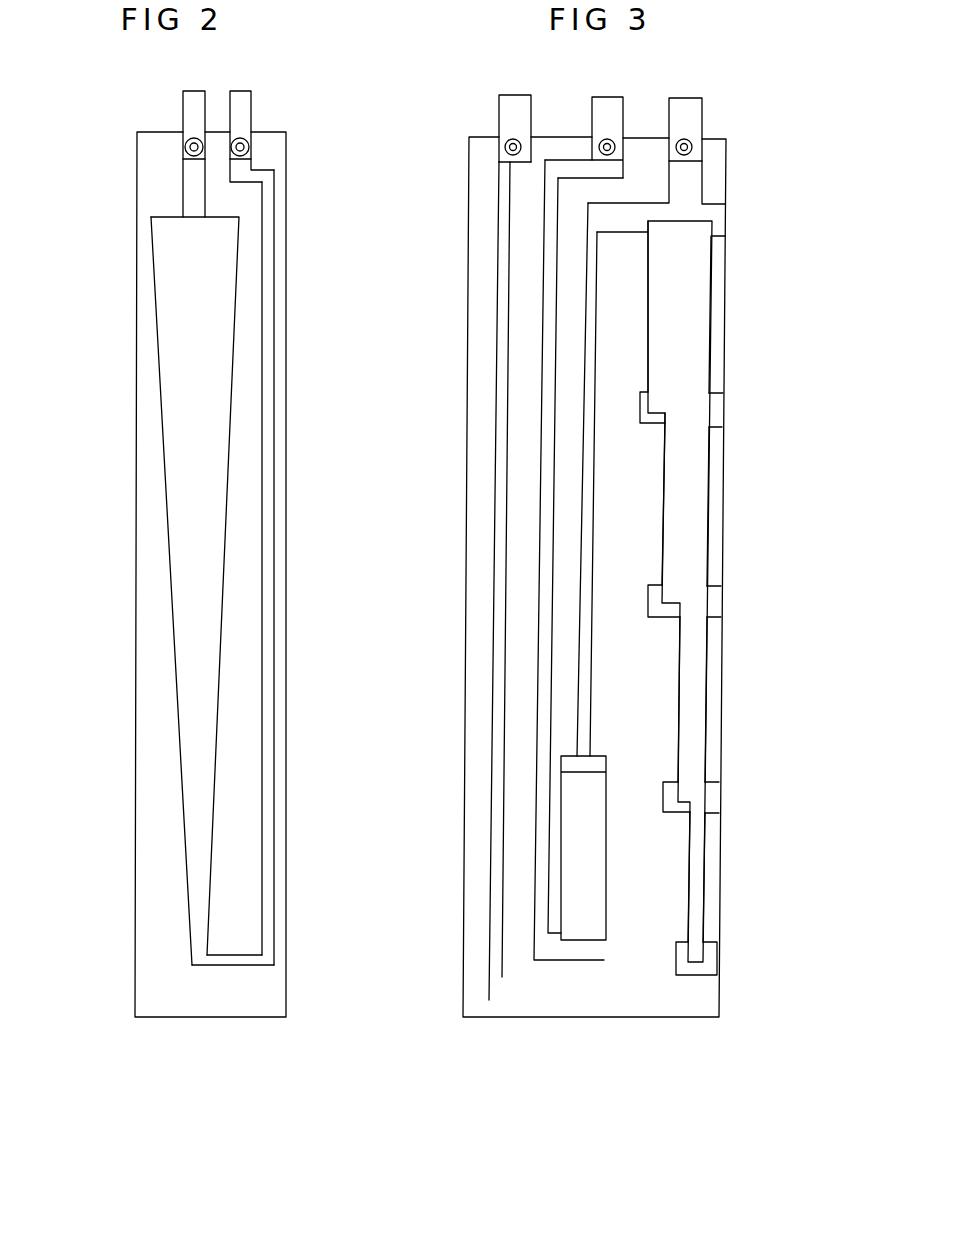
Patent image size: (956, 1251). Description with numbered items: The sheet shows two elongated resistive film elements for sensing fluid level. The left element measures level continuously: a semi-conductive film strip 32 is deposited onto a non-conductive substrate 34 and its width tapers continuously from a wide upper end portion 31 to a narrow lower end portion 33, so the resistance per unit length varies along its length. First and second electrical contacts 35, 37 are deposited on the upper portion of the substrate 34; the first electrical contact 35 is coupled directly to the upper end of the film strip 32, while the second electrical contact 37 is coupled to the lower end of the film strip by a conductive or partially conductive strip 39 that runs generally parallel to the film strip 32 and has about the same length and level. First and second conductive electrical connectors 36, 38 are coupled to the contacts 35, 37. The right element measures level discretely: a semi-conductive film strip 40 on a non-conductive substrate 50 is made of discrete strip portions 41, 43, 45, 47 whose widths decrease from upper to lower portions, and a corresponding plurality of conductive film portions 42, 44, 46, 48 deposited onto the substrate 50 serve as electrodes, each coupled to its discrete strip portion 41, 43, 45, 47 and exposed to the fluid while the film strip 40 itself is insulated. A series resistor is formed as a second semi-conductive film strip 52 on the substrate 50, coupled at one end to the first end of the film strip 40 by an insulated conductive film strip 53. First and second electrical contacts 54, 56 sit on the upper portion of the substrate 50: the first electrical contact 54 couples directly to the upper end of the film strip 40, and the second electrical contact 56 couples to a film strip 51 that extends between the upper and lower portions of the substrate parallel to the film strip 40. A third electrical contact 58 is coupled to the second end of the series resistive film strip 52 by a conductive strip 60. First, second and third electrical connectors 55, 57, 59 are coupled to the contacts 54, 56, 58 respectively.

In FIG. 2, the upper end portion 31 is at (177, 262).
In FIG. 2, the semi-conductive film strip 32 is at (153, 497).
In FIG. 2, the lower end portion 33 is at (200, 925).
In FIG. 2, the non-conductive substrate 34 is at (126, 675).
In FIG. 2, the first electrical contact 35 is at (190, 178).
In FIG. 2, the first conductive electrical connector 36 is at (193, 115).
In FIG. 2, the second electrical contact 37 is at (250, 160).
In FIG. 2, the second conductive electrical connector 38 is at (240, 107).
In FIG. 2, the conductive or partially conductive strip 39 is at (258, 455).
In FIG. 3, the semi-conductive film strip 40 is at (720, 255).
In FIG. 3, the discrete strip portion 41 is at (690, 325).
In FIG. 3, the conductive film portion 42 is at (716, 408).
In FIG. 3, the discrete strip portion 43 is at (690, 500).
In FIG. 3, the conductive film portion 44 is at (712, 602).
In FIG. 3, the discrete strip portion 45 is at (690, 695).
In FIG. 3, the conductive film portion 46 is at (715, 795).
In FIG. 3, the discrete strip portion 47 is at (690, 855).
In FIG. 3, the conductive film portion 48 is at (710, 957).
In FIG. 3, the non-conductive substrate 50 is at (459, 600).
In FIG. 3, the film strip 51 is at (503, 325).
In FIG. 3, the second semi-conductive film strip 52 is at (601, 868).
In FIG. 3, the conductive film strip 53 is at (583, 652).
In FIG. 3, the first electrical contact 54 is at (690, 185).
In FIG. 3, the first electrical connector 55 is at (690, 112).
In FIG. 3, the second electrical contact 56 is at (503, 163).
In FIG. 3, the second electrical connector 57 is at (512, 120).
In FIG. 3, the third electrical contact 58 is at (600, 173).
In FIG. 3, the third electrical connector 59 is at (605, 112).
In FIG. 3, the conductive strip 60 is at (542, 758).